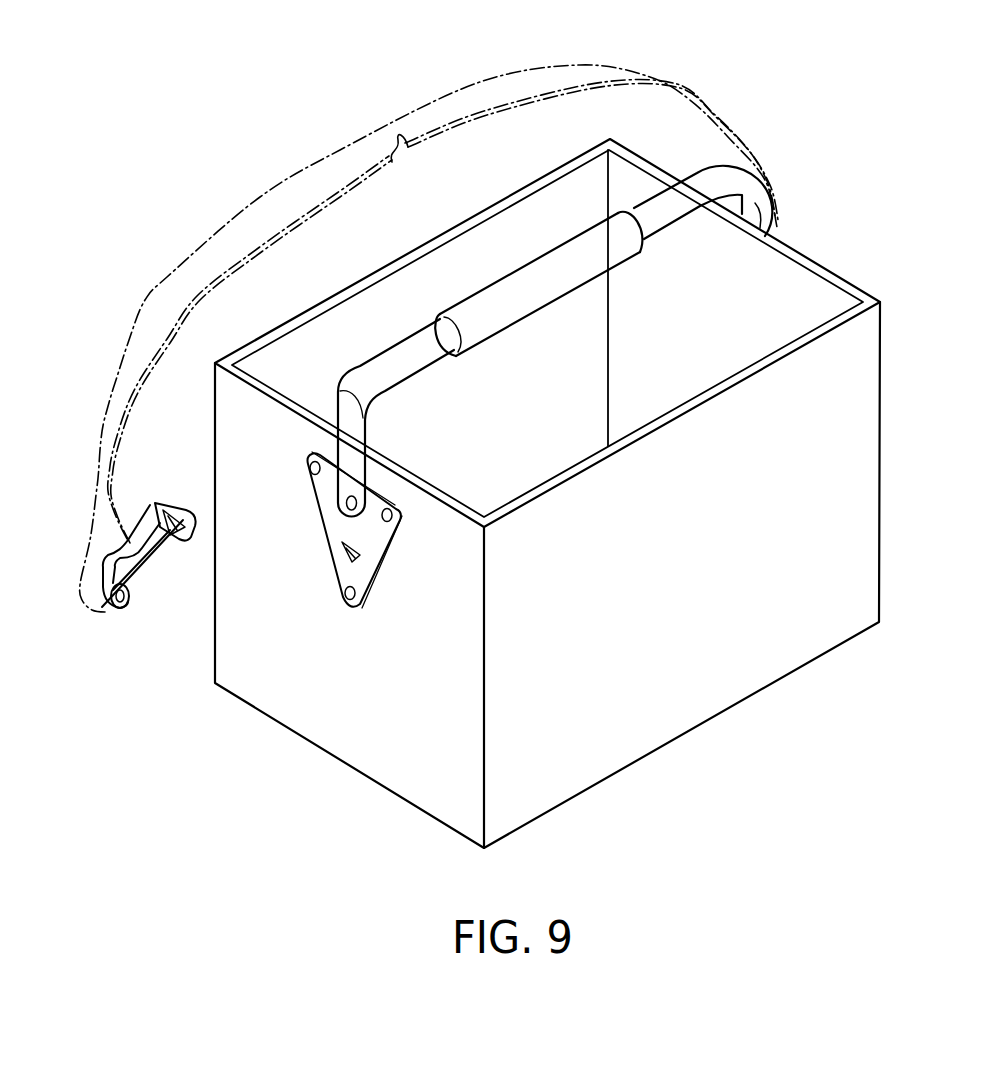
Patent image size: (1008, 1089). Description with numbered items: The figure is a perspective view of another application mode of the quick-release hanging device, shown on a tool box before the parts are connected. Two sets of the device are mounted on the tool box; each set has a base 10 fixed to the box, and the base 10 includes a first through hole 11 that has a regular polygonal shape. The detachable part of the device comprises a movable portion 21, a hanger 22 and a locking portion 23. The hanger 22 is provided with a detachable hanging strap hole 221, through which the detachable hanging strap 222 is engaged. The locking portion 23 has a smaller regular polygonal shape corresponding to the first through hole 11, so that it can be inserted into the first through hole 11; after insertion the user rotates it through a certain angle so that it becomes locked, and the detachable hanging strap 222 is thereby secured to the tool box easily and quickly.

The base 10 is at (300, 492).
The first through hole 11 is at (348, 551).
The movable portion 21 is at (152, 507).
The hanger 22 is at (113, 587).
The detachable hanging strap hole 221 is at (137, 573).
The locking portion 23 is at (180, 527).
The detachable hanging strap 222 is at (438, 113).